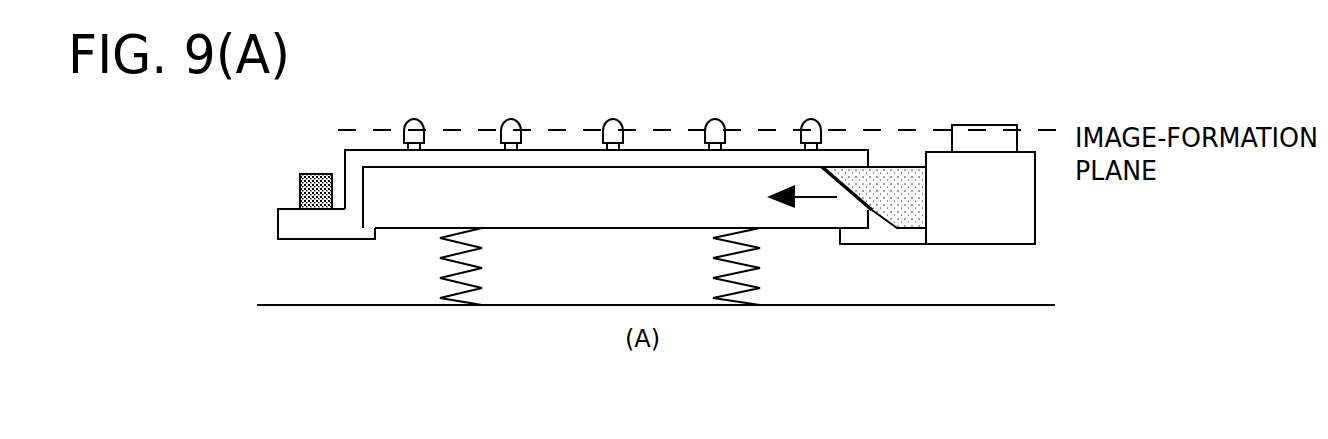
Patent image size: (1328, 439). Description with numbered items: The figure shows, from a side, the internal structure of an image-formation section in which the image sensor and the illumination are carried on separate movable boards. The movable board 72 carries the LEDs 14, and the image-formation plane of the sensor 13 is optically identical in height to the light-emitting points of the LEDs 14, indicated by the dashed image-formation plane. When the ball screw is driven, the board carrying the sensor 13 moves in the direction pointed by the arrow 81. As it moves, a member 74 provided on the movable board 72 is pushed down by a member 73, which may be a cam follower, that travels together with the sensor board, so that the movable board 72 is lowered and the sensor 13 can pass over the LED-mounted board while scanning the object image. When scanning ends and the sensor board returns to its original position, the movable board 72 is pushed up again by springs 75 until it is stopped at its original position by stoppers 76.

The sensor 13 is at (1008, 124).
The LEDs 14 is at (810, 122).
The movable board 72 is at (548, 158).
The member 73 is at (910, 212).
The member 74 is at (622, 212).
The springs 75 is at (472, 300).
The stoppers 76 is at (318, 174).
The arrow 81 is at (812, 198).